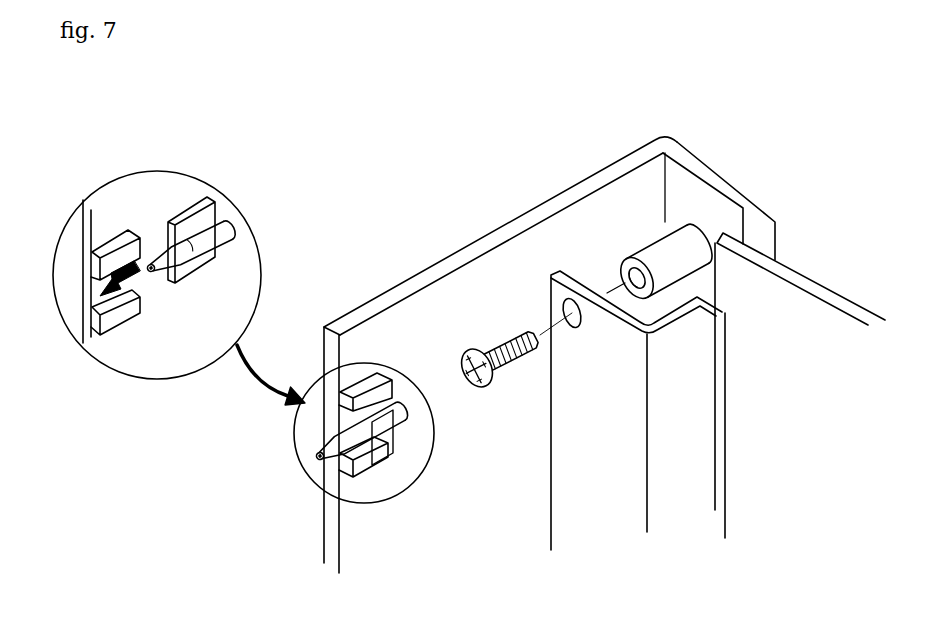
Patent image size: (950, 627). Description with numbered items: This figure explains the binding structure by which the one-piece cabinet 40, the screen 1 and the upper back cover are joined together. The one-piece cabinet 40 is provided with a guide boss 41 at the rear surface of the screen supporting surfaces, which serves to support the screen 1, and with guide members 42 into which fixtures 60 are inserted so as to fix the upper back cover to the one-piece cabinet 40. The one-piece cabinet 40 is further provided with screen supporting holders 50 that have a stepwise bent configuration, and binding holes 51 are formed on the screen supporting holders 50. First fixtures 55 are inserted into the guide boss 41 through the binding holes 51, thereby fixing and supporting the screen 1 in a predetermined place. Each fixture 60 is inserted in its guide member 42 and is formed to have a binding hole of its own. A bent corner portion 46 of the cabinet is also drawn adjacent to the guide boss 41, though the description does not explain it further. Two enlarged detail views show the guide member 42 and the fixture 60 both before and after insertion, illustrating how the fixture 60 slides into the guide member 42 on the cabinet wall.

The screen 1 is at (813, 293).
The one-piece cabinet 40 is at (468, 252).
The guide boss 41 is at (649, 254).
The guide member 42 is at (93, 252).
The bent portion 46 is at (727, 181).
The screen supporting holder 50 is at (566, 461).
The binding hole 51 is at (563, 307).
The first fixture 55 is at (466, 355).
The fixture 60 is at (213, 215).